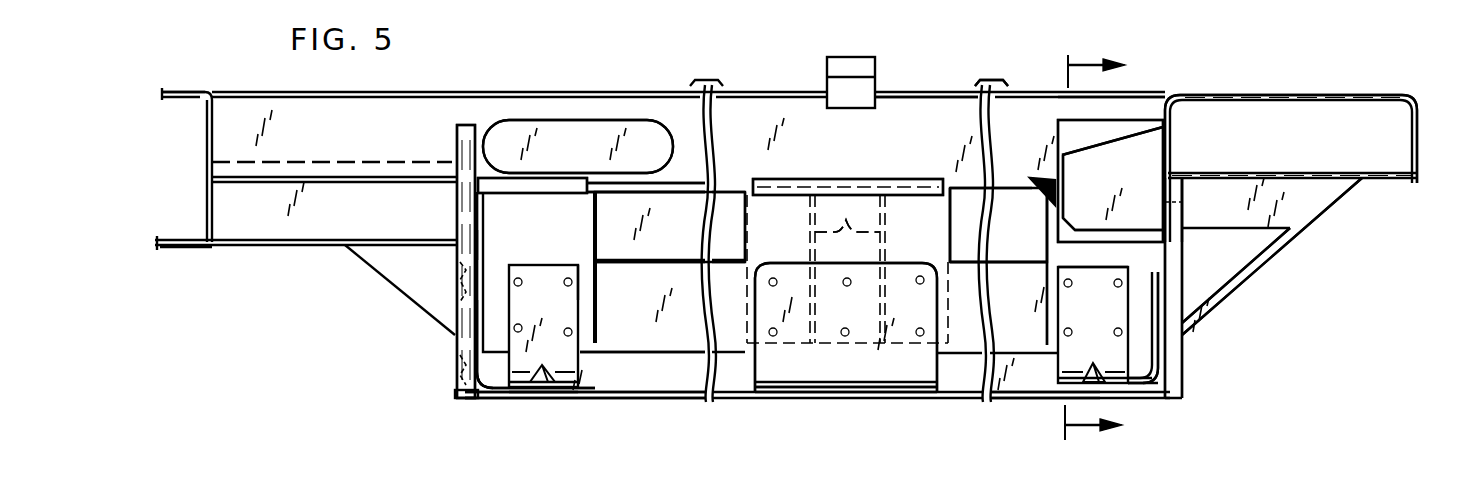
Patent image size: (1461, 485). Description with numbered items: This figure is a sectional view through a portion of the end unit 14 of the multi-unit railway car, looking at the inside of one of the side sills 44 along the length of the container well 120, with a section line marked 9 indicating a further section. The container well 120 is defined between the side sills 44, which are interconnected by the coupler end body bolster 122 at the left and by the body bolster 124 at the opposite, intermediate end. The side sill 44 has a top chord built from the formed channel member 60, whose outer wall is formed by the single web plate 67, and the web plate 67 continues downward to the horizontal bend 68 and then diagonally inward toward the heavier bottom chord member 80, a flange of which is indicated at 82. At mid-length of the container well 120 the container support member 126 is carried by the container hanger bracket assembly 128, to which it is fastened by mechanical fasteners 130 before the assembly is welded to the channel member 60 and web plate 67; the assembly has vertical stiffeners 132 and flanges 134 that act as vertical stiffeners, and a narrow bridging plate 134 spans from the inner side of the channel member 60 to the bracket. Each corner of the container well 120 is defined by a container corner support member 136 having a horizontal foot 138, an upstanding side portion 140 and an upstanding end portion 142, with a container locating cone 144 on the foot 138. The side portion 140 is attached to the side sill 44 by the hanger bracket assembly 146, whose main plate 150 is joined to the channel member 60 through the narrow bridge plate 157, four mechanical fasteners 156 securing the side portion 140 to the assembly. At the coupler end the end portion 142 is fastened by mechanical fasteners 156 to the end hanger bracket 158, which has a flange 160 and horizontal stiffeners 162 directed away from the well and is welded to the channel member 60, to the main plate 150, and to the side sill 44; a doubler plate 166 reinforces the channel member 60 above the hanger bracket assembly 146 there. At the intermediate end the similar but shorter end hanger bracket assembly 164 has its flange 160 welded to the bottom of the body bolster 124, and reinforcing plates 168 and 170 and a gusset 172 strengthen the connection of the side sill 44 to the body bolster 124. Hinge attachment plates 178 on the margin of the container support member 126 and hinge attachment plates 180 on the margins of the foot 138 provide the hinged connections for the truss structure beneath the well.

The section line 9- 9 is at (1087, 245).
The end unit 14 is at (1160, 75).
The side sill 44 is at (970, 90).
The channel member 60 is at (935, 142).
The web plate 67 is at (675, 234).
The bend 68 is at (710, 275).
The bottom chord member 80 is at (672, 380).
The floor flange 82 is at (568, 400).
The container well 120 is at (684, 198).
The coupler end body bolster 122 is at (188, 90).
The body bolster 124 is at (1322, 95).
The container support member 126 is at (925, 370).
The container hanger bracket assembly 128 is at (943, 243).
The mechanical fasteners 130 is at (777, 285).
The vertical stiffeners 132 is at (847, 215).
The flanges / bridging plate 134 is at (825, 183).
The container corner support member 136 is at (570, 362).
The horizontal bottom portion (foot) 138 is at (520, 393).
The side portion 140 is at (573, 293).
The end portion 142 is at (480, 326).
The container locating cone 144 is at (572, 392).
The hanger bracket assembly 146 is at (596, 318).
The main plate 150 is at (560, 245).
The mechanical fasteners 156 is at (522, 285).
The bridge plate 157 is at (537, 195).
The end hanger bracket 158 is at (478, 243).
The flange 160 is at (463, 212).
The horizontal stiffeners 162 is at (458, 284).
The end hanger bracket assembly 164 is at (1180, 208).
The doubler plate 166 is at (590, 150).
The reinforcing plate 168 is at (1090, 145).
The reinforcing plate 170 is at (1130, 185).
The gusset 172 is at (1255, 262).
The hinge attachment plate 178 is at (865, 396).
The hinge attachment plate 180 is at (505, 396).